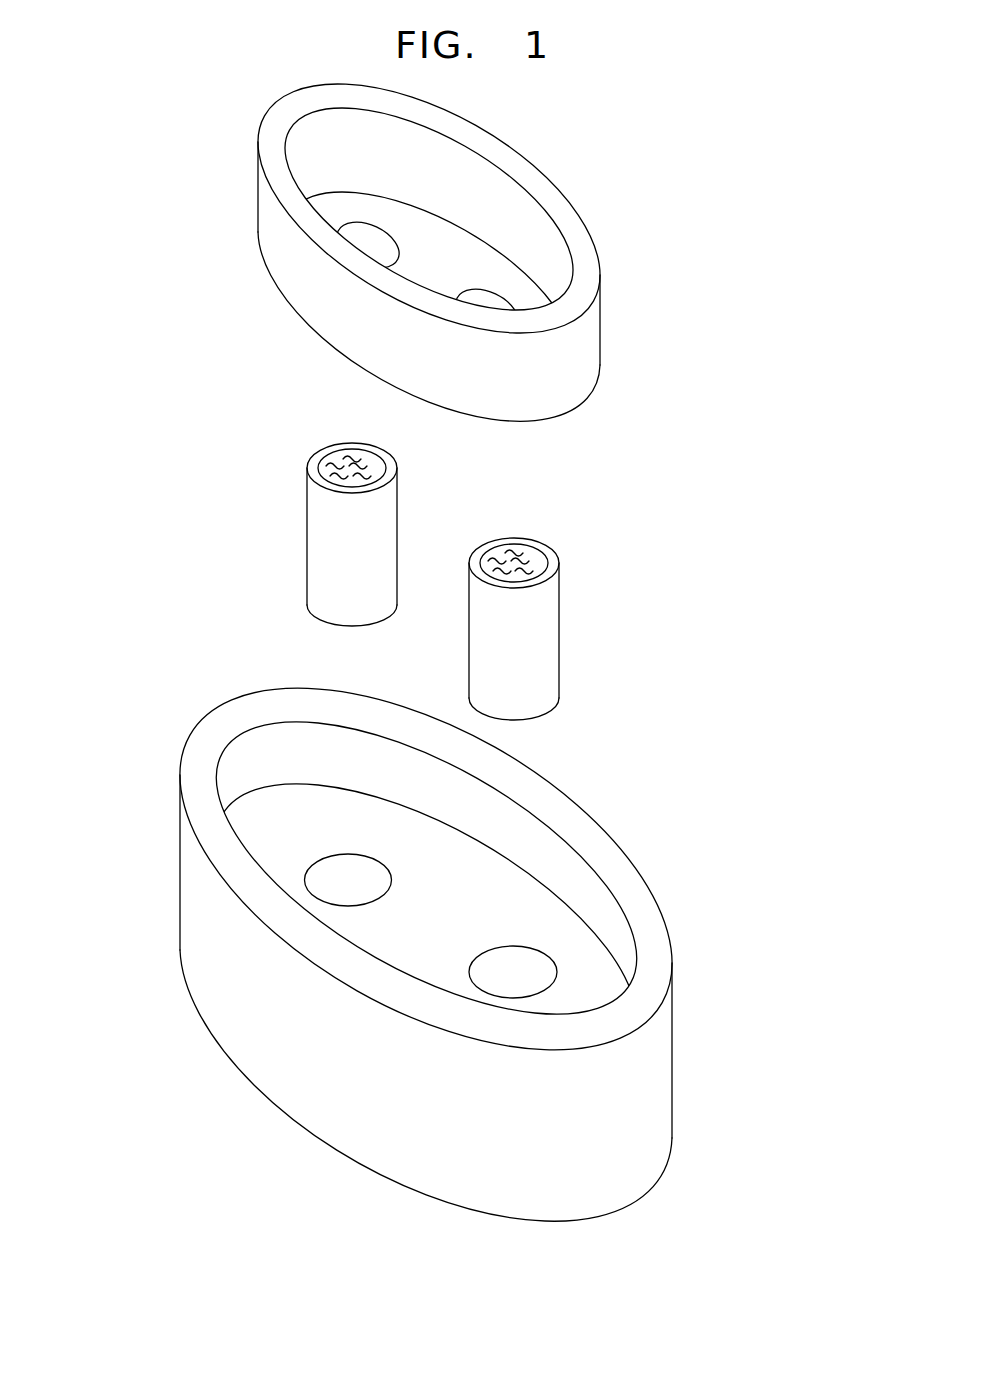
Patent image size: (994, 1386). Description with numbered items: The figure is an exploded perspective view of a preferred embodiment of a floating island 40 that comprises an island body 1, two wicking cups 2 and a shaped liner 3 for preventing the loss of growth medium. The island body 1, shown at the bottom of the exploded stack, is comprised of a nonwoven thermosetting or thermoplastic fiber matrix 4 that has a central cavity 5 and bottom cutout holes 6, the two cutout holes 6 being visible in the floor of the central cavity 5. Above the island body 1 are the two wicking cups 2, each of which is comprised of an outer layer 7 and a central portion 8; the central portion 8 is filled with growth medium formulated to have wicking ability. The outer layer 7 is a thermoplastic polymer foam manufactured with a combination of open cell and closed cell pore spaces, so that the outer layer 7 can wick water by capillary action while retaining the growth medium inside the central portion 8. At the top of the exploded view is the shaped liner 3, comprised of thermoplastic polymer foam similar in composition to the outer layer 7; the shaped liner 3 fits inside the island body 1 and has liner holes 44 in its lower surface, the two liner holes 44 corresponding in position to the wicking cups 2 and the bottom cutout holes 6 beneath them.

The island body 1 is at (159, 844).
The wicking cups 2 is at (294, 527).
The shaped liner 3 is at (275, 235).
The nonwoven thermosetting or thermoplastic fiber matrix 4 is at (202, 950).
The central cavity 5 is at (572, 953).
The bottom cutout holes 6 is at (363, 880).
The outer layer 7 is at (552, 560).
The central portion 8 is at (512, 560).
The floating island 40 is at (708, 292).
The liner holes 44 is at (378, 253).